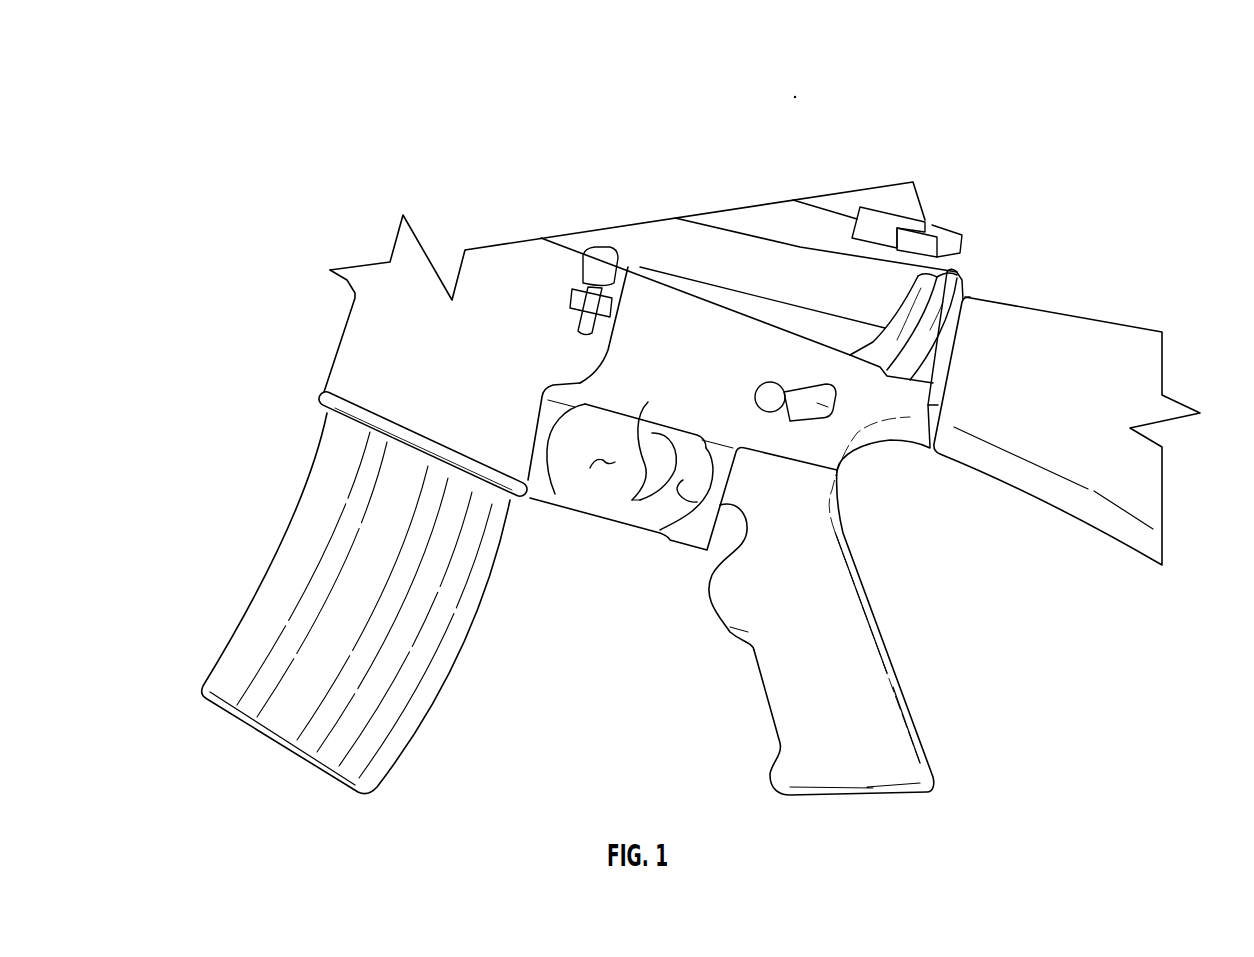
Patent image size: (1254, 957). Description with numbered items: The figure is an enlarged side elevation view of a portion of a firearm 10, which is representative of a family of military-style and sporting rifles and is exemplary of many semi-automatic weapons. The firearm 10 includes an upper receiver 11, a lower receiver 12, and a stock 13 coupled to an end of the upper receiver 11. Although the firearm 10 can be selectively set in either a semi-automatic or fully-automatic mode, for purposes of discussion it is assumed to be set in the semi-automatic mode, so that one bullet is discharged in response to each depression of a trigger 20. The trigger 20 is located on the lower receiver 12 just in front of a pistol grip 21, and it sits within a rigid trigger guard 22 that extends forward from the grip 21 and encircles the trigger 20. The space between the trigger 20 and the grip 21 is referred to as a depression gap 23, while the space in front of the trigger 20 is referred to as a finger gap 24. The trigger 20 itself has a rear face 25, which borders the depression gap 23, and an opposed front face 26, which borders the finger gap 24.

The firearm 10 is at (1143, 152).
The upper receiver 11 is at (960, 267).
The lower receiver 12 is at (880, 438).
The stock 13 is at (1129, 326).
The trigger 20 is at (634, 499).
The pistol grip 21 is at (907, 693).
The trigger guard 22 is at (577, 507).
The depression gap 23 is at (735, 545).
The finger gap 24 is at (613, 463).
The rear face 25 is at (697, 502).
The front face 26 is at (652, 395).